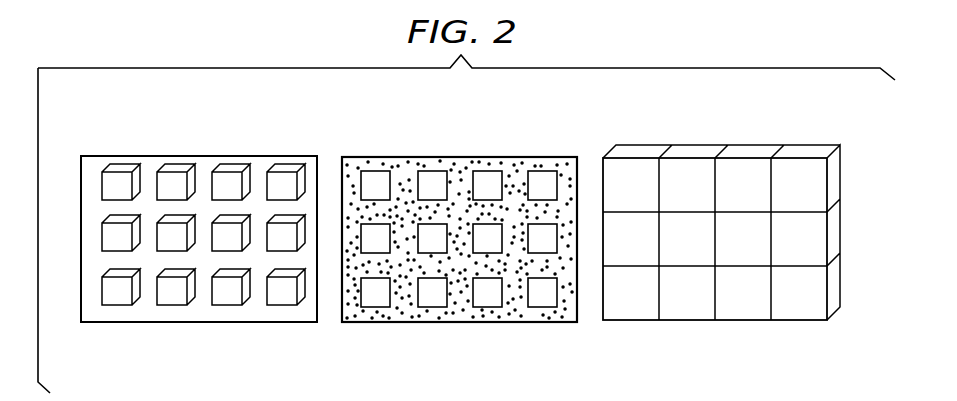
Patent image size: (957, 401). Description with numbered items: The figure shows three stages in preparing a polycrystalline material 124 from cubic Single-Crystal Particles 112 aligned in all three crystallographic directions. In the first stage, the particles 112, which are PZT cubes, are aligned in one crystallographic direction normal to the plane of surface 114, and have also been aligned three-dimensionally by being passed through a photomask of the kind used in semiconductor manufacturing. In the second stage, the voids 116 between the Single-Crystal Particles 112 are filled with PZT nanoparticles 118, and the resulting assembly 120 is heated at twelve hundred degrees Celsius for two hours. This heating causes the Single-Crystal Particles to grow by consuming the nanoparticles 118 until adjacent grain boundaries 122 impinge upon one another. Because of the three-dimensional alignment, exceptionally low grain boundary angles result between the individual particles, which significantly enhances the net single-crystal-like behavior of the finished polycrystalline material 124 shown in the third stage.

The Single-Crystal Particles 112 is at (689, 345).
The surface 114 is at (257, 182).
The voids 116 is at (257, 297).
The PZT nanoparticles 118 is at (513, 186).
The assembly 120 is at (483, 308).
The grain boundaries 122 is at (770, 185).
The polycrystalline material 124 is at (638, 153).